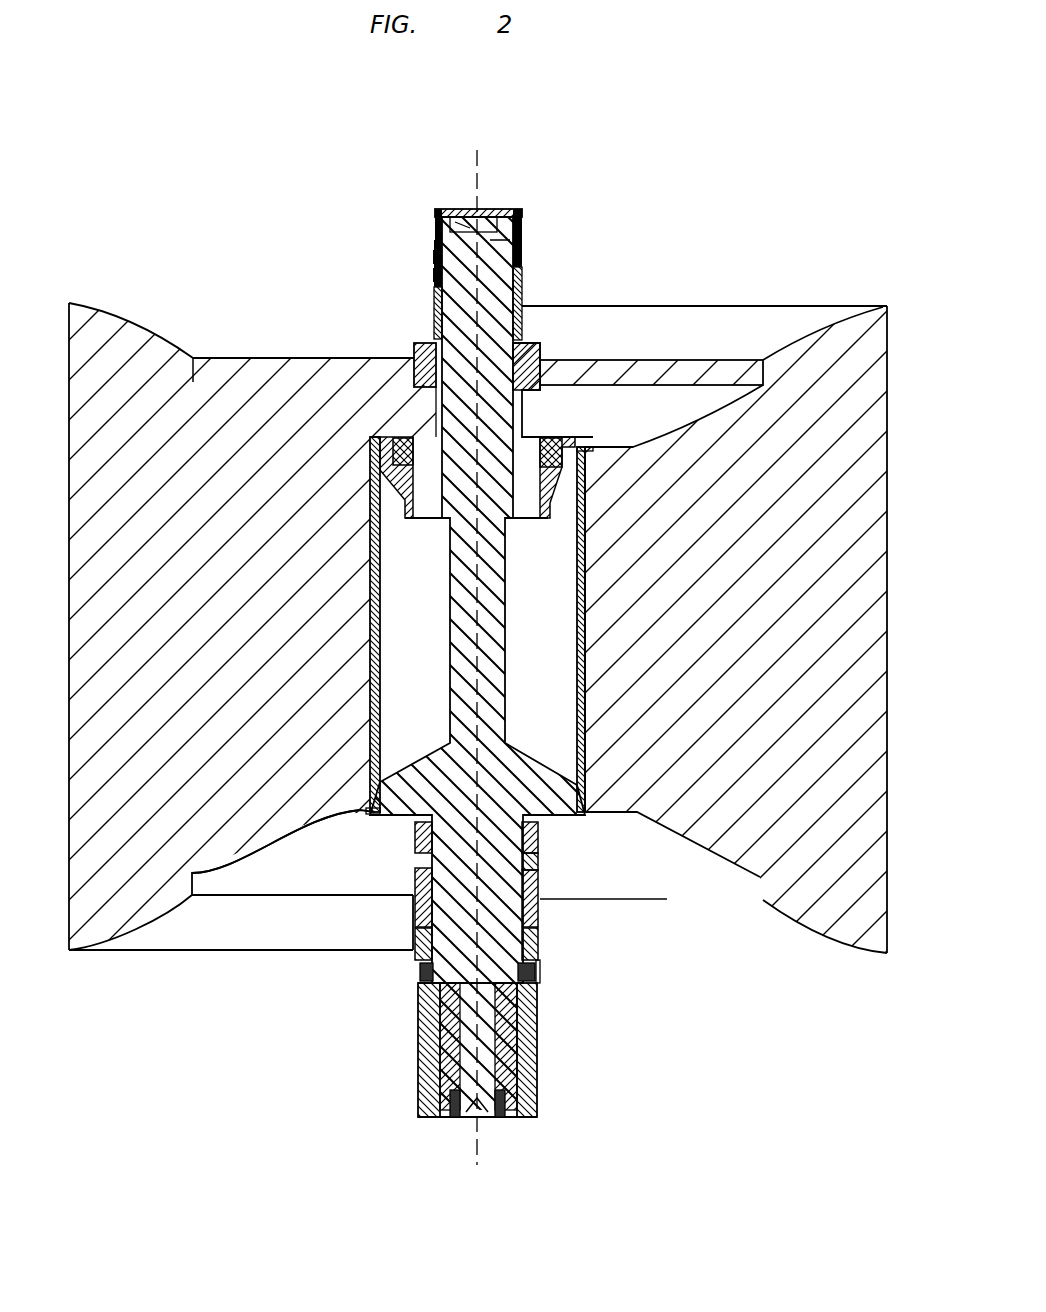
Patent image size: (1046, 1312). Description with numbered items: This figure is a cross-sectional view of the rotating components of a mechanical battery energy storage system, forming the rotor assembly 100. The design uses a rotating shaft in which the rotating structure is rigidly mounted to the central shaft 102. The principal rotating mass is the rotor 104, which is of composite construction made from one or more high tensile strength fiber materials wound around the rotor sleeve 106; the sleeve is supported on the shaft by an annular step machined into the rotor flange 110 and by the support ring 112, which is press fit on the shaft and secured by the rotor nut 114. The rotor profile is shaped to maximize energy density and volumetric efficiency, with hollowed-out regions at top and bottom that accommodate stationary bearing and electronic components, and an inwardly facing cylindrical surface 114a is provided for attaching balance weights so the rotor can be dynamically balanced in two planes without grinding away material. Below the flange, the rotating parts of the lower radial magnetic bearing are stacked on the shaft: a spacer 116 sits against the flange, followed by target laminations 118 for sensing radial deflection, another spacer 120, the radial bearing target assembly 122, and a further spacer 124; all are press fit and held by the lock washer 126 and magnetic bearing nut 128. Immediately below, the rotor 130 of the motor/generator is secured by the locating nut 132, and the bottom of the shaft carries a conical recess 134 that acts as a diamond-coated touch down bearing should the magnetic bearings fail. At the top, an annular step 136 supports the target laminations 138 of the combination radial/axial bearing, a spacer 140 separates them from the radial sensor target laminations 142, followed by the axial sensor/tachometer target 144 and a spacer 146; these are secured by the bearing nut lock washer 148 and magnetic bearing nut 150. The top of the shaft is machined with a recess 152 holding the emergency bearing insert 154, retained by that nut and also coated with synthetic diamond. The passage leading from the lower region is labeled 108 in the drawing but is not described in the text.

The rotor assembly 100 is at (888, 773).
The central shaft 102 is at (553, 430).
The rotor 104 is at (888, 535).
The rotor sleeve 106 is at (577, 622).
The outlet passage 108 is at (375, 820).
The rotor flange 110 is at (423, 775).
The support ring 112 is at (623, 427).
The rotor nut 114 is at (527, 407).
The inwardly facing cylindrical surface 114a is at (220, 368).
The spacer 116 is at (540, 830).
The target laminations 118 is at (540, 843).
The spacer 120 is at (540, 857).
The radial bearing target assembly 122 is at (540, 953).
The spacer 124 is at (650, 982).
The lock washer 126 is at (560, 975).
The magnetic bearing nut 128 is at (540, 980).
The rotor of the motor/generator 130 is at (195, 887).
The locating nut 132 is at (437, 1120).
The conical recess 134 is at (487, 1122).
The annular step 136 is at (438, 400).
The target laminations 138 is at (414, 356).
The spacer 140 is at (436, 322).
The radial sensor target laminations 142 is at (435, 277).
The axial sensor/tachometer target 144 is at (435, 258).
The spacer 146 is at (433, 240).
The bearing nut lock washer 148 is at (434, 217).
The magnetic bearing nut 150 is at (447, 210).
The recess 152 is at (523, 232).
The emergency bearing insert 154 is at (467, 218).